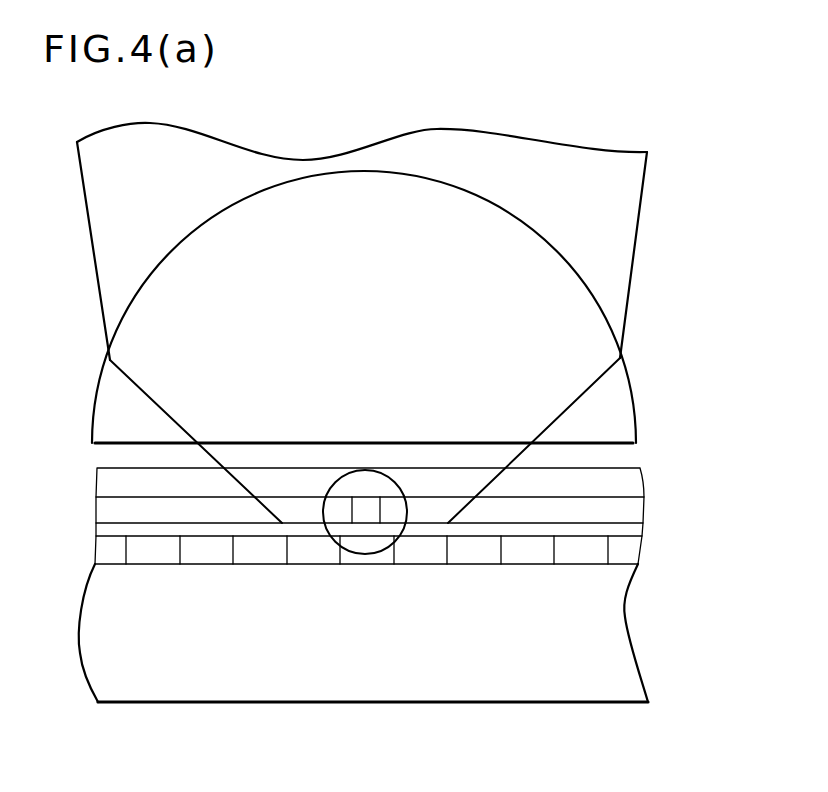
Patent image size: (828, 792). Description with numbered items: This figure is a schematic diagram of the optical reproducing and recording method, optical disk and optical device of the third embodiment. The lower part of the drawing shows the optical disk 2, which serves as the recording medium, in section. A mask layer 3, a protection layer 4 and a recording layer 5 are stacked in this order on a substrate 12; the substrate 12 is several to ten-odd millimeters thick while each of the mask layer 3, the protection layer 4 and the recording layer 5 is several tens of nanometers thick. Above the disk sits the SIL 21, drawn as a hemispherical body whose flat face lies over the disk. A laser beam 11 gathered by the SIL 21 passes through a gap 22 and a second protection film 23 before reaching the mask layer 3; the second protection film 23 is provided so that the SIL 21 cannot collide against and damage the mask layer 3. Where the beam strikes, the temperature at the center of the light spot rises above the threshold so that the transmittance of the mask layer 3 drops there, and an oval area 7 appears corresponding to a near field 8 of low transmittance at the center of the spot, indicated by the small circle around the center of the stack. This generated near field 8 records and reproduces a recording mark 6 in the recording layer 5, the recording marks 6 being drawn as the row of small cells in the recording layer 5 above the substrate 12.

The optical disk 2 is at (417, 585).
The mask layer 3 is at (633, 510).
The protection layer 4 is at (638, 530).
The recording layer 5 is at (628, 552).
The recording mark 6 is at (263, 553).
The oval area 7 is at (365, 507).
The near field 8 is at (407, 528).
The laser beam 11 is at (625, 210).
The substrate 12 is at (615, 637).
The SIL 21 is at (613, 397).
The gap 22 is at (623, 457).
The second protection film 23 is at (628, 485).